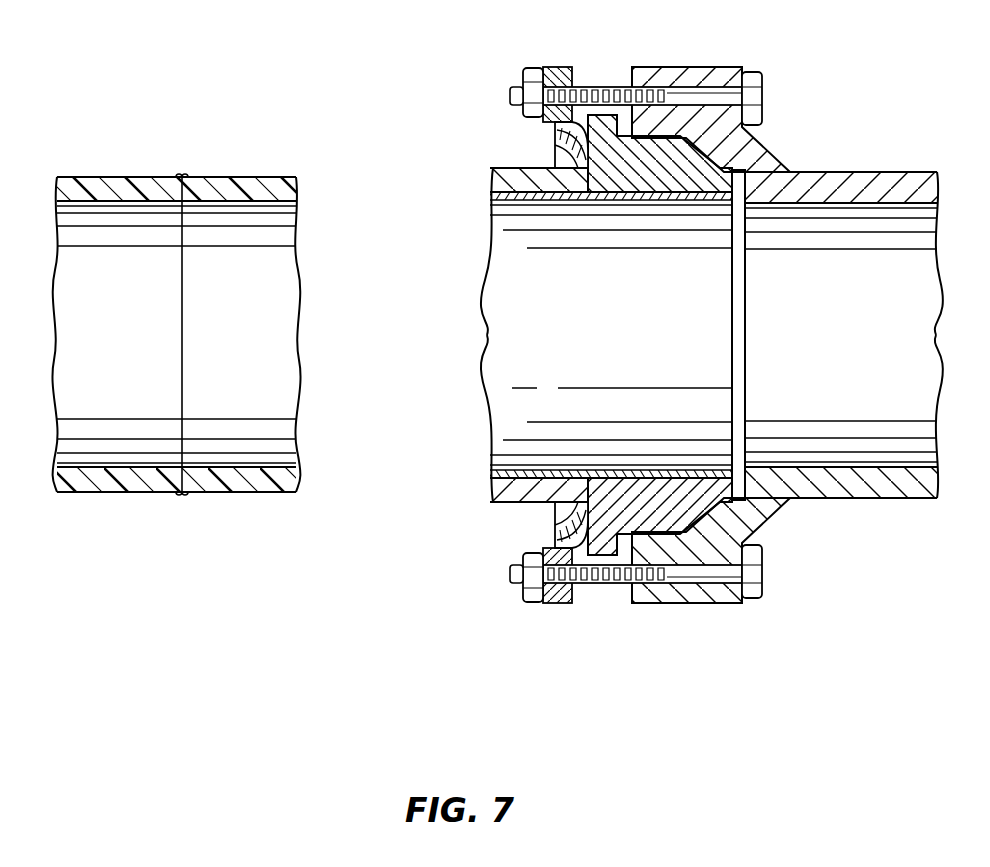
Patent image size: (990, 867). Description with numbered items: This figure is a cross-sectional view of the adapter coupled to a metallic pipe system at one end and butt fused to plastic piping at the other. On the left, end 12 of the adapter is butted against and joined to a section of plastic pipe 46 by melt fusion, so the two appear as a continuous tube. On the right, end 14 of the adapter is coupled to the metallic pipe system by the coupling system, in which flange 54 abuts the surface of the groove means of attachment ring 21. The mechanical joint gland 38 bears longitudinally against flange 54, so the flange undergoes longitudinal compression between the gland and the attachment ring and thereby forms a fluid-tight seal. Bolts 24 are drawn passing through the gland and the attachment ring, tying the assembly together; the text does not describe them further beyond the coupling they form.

The end of the adapter 12 is at (176, 302).
The plastic pipe 46 is at (98, 177).
The end of the adapter 14 is at (497, 168).
The mechanical joint gland 38 is at (557, 133).
The bolt 24 is at (762, 85).
The flange 54 is at (760, 140).
The attachment ring 21 is at (785, 164).